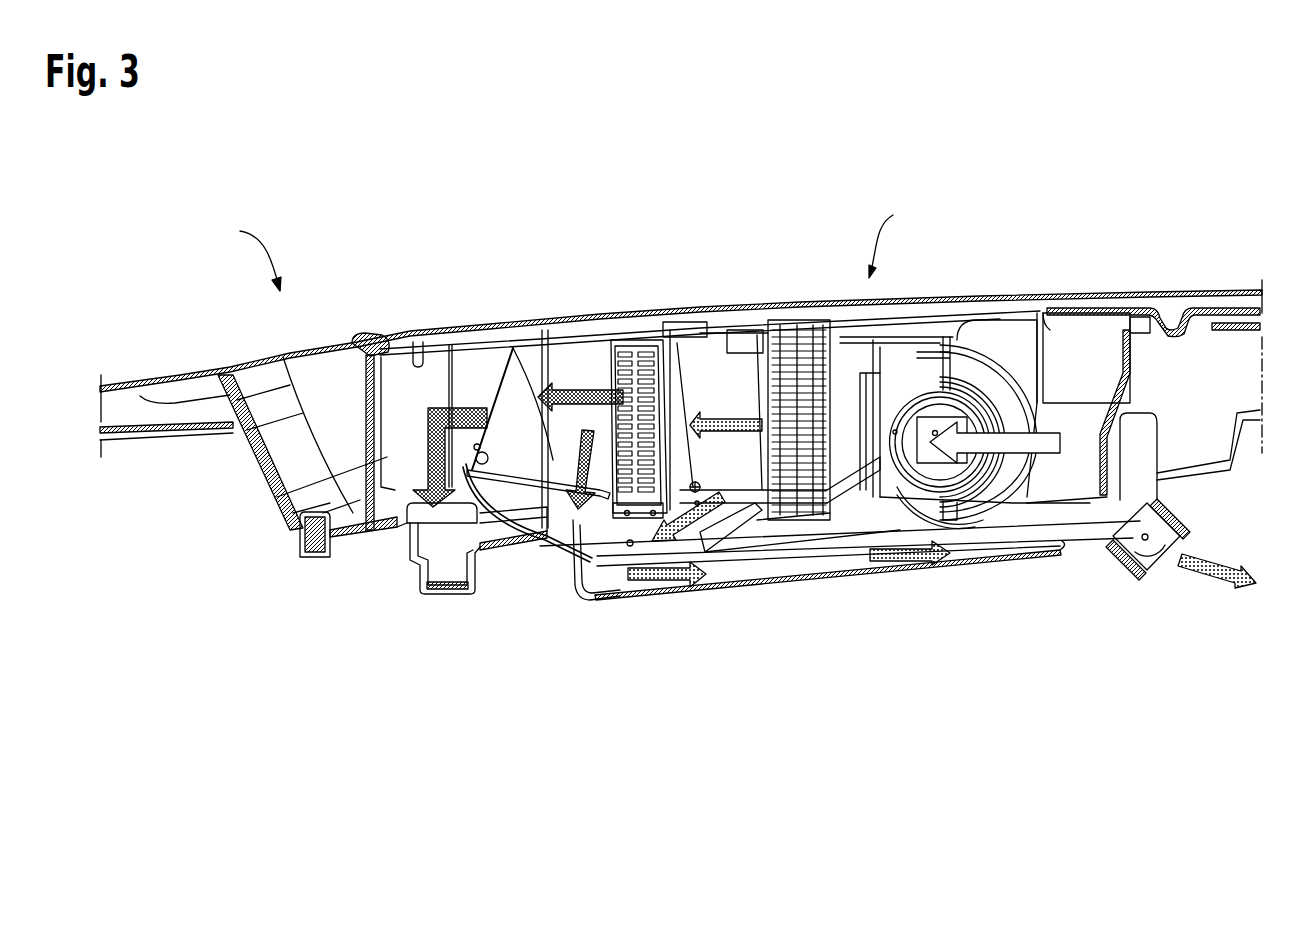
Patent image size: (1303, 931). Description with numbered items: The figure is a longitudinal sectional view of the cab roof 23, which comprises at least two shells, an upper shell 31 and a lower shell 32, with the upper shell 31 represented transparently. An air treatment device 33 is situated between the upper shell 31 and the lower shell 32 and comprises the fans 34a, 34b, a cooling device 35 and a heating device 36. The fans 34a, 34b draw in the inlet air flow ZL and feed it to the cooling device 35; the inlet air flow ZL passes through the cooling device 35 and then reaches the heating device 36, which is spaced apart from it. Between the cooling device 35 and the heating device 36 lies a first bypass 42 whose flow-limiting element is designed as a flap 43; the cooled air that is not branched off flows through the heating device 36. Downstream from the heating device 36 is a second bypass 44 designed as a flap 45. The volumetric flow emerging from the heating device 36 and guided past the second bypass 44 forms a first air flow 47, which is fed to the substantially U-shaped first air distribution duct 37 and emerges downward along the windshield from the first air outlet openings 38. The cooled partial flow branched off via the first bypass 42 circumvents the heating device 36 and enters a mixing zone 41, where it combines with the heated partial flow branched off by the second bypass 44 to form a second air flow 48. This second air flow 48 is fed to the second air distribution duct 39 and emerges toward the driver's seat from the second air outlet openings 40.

The cab roof 23 is at (244, 256).
The upper shell 31 is at (178, 373).
The lower shell 32 is at (290, 532).
The air treatment device 33 is at (901, 240).
The fan 34a is at (968, 370).
The fan 34b is at (1078, 408).
The cooling device 35 is at (795, 345).
The heating device 36 is at (628, 340).
The first air distribution duct 37 is at (430, 571).
The first air outlet openings 38 is at (450, 593).
The second air distribution duct 39 is at (795, 565).
The second air outlet openings 40 is at (1158, 555).
The mixing zone 41 is at (608, 540).
The first bypass 42 is at (675, 340).
The flap 43 is at (790, 441).
The second bypass 44 is at (513, 348).
The flap 45 is at (527, 513).
The first air flow 47 is at (423, 450).
The second air flow 48 is at (896, 556).
The inlet air flow ZL is at (1043, 443).